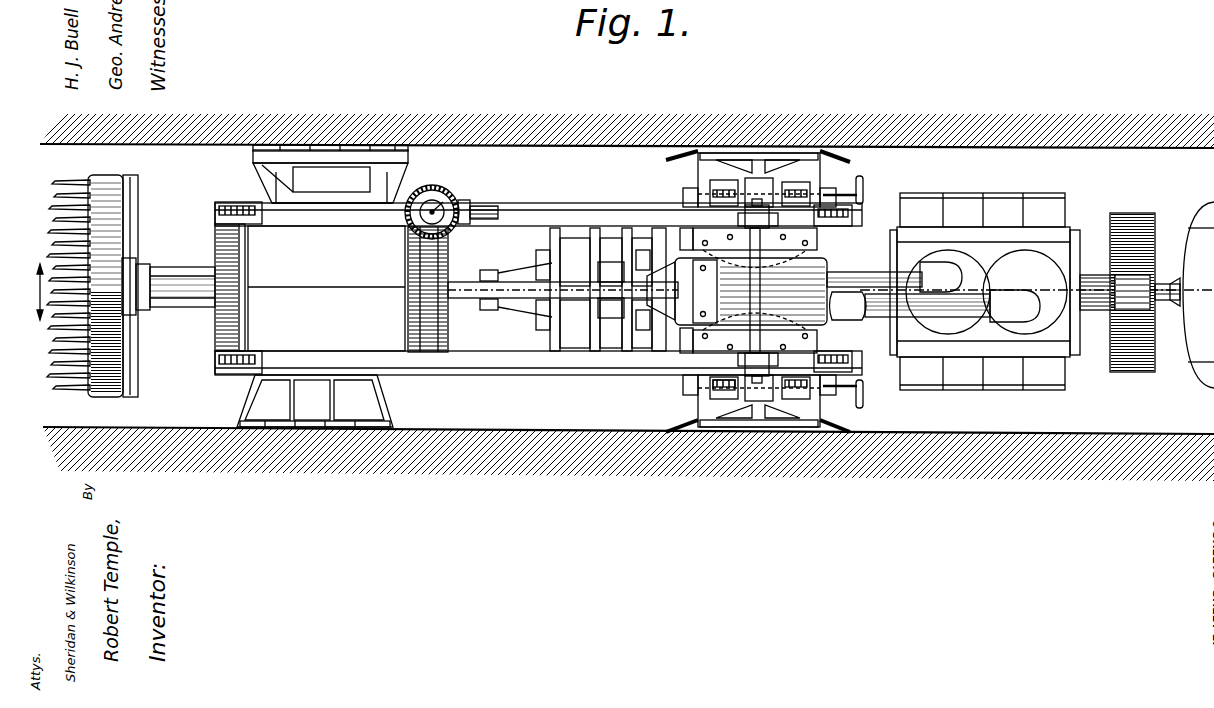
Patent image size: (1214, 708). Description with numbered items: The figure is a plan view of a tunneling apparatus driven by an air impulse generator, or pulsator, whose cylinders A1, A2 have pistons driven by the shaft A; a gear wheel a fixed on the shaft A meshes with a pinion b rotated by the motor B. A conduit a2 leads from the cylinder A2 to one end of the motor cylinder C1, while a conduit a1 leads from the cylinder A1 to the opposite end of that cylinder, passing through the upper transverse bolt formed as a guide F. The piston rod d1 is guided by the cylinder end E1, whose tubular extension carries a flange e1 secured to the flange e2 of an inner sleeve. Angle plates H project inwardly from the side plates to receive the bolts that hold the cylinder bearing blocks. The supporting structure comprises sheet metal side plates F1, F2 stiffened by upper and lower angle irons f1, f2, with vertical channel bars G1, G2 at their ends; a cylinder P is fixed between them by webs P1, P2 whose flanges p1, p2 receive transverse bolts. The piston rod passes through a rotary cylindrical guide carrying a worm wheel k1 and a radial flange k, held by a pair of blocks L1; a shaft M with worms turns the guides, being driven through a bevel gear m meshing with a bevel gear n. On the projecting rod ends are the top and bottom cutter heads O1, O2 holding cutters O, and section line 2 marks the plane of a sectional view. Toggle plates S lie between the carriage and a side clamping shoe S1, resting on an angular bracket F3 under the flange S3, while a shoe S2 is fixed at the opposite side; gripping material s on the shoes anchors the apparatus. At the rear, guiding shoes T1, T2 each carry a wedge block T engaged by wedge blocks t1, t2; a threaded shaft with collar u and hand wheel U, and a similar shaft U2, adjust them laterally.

The cutters O is at (56, 205).
The top cutter head O1 is at (105, 286).
The bottom cutter head O2 is at (138, 346).
The section line 2 is at (29, 292).
The radial flange k is at (230, 287).
The worm wheel k1 is at (449, 312).
The vertical channel bar G1 is at (217, 211).
The vertical channel bar G2 is at (217, 359).
The pair of blocks L1 is at (310, 296).
The side clamping shoe S1 is at (253, 158).
The shoe S2 is at (315, 401).
The horizontal flange S3 is at (331, 179).
The toggle plates S is at (357, 190).
The gripping material s is at (335, 148).
The angular bracket F3 is at (270, 190).
The side plate F1 is at (548, 222).
The side plate F2 is at (538, 366).
The angle iron f1 is at (516, 214).
The angle iron f2 is at (496, 370).
The shaft M is at (450, 196).
The bevel gear m is at (432, 187).
The bevel gear n is at (466, 210).
The piston rod d1 is at (467, 283).
The cylinder P is at (582, 256).
The web P1 is at (604, 237).
The web P2 is at (616, 352).
The flange p1 is at (641, 237).
The flange p2 is at (645, 354).
The flange e1 is at (611, 271).
The flange e2 is at (611, 314).
The motor cylinder C1 is at (832, 266).
The guide F is at (762, 285).
The angle plates H is at (818, 238).
The cylinder end E1 is at (682, 290).
The collar u is at (770, 215).
The hand wheel U is at (864, 190).
The shaft U2 is at (722, 385).
The wedge block T is at (758, 178).
The guiding shoe T1 is at (794, 150).
The guiding shoe T2 is at (768, 428).
The wedge block t1 is at (712, 190).
The wedge block t2 is at (812, 186).
The conduit a1 is at (894, 276).
The conduit a2 is at (935, 306).
The cylinder A1 is at (948, 330).
The cylinder A2 is at (986, 292).
The shaft A is at (1095, 312).
The gear wheel a is at (1120, 225).
The pinion b is at (1122, 285).
The motor B is at (1183, 368).